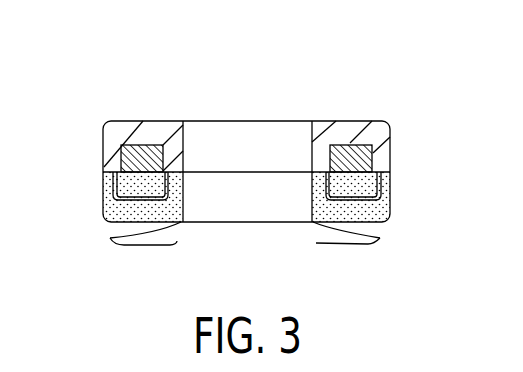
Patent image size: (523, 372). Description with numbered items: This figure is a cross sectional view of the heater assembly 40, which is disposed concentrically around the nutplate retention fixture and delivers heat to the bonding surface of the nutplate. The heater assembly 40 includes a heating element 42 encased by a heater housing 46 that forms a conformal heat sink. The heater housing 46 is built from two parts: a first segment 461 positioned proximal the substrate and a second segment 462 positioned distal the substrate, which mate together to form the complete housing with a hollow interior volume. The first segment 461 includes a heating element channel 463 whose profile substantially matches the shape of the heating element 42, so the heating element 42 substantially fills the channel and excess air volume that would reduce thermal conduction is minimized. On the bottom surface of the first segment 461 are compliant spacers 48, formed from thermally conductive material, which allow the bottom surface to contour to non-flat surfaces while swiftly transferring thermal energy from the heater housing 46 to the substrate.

The heater assembly 40 is at (402, 92).
The heating element 42 is at (372, 177).
The heater housing 46 is at (118, 169).
The compliant spacers 48 is at (110, 238).
The first segment 461 is at (382, 207).
The second segment 462 is at (117, 131).
The heating element channel 463 is at (168, 190).